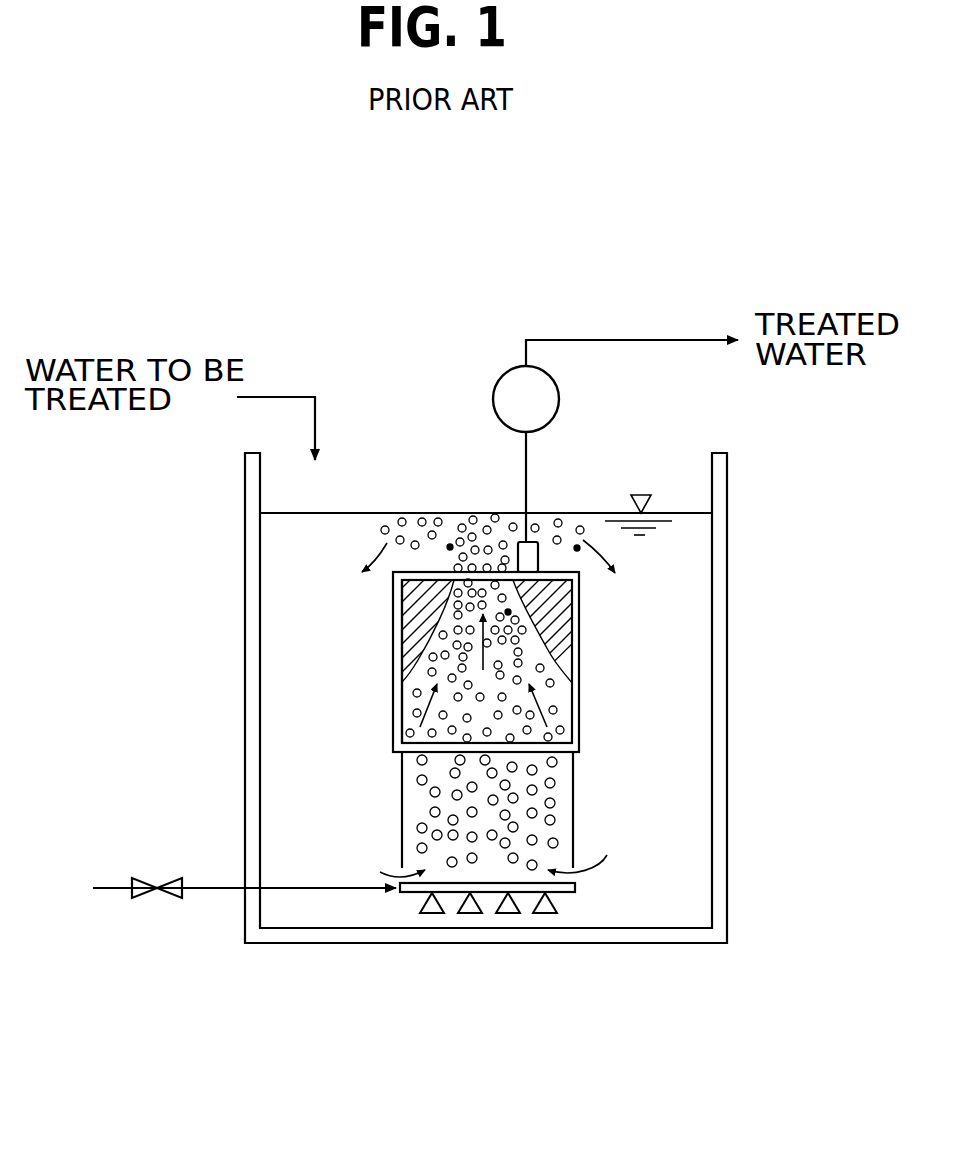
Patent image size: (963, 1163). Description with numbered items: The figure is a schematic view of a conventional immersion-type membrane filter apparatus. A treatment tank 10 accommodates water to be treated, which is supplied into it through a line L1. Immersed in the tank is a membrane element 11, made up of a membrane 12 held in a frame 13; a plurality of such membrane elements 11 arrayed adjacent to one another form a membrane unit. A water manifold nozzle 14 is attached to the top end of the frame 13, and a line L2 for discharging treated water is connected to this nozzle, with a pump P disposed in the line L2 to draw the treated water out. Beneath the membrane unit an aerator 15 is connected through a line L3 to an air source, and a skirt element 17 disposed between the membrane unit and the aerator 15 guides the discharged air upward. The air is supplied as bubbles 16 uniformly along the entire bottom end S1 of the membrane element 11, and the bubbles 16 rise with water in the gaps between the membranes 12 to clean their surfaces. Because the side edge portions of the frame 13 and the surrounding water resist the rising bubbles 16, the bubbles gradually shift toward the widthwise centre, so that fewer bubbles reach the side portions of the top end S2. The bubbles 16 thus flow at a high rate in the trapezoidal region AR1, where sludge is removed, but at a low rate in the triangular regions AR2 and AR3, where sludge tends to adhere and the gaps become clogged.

The treatment tank 10 is at (727, 545).
The membrane element 11 is at (598, 682).
The membrane 12 is at (400, 690).
The frame 13 is at (580, 727).
The water manifold nozzle 14 is at (543, 552).
The aerator 15 is at (488, 900).
The bubbles 16 is at (555, 803).
The skirt element 17 is at (400, 836).
The line L1 is at (290, 397).
The line L2 is at (526, 460).
The line L3 is at (213, 892).
The trapezoidal region AR1 is at (433, 665).
The triangular region AR2 is at (418, 607).
The triangular region AR3 is at (555, 627).
The bottom end S1 is at (442, 754).
The top end S2 is at (433, 571).